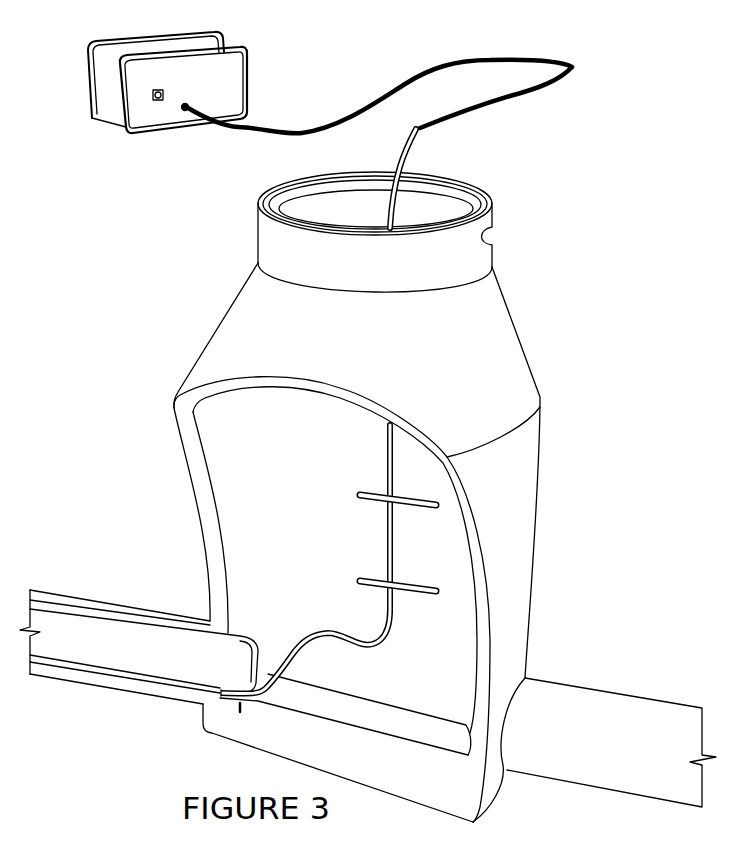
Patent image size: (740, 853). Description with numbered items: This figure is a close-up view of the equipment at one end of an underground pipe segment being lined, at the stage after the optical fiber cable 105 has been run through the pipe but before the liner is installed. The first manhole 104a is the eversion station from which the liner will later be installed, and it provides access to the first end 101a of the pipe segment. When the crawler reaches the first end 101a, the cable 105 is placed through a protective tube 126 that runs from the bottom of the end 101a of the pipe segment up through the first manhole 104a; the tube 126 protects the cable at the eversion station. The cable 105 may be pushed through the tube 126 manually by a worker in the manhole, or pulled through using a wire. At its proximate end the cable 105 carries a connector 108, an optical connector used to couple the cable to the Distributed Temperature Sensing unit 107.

The first end of the pipe segment 101a is at (178, 620).
The first manhole 104a is at (486, 196).
The optical fiber cable 105 is at (526, 59).
The Distributed Temperature Sensing (DTS) unit 107 is at (110, 107).
The connector 108 is at (188, 105).
The protective tube 126 is at (287, 648).